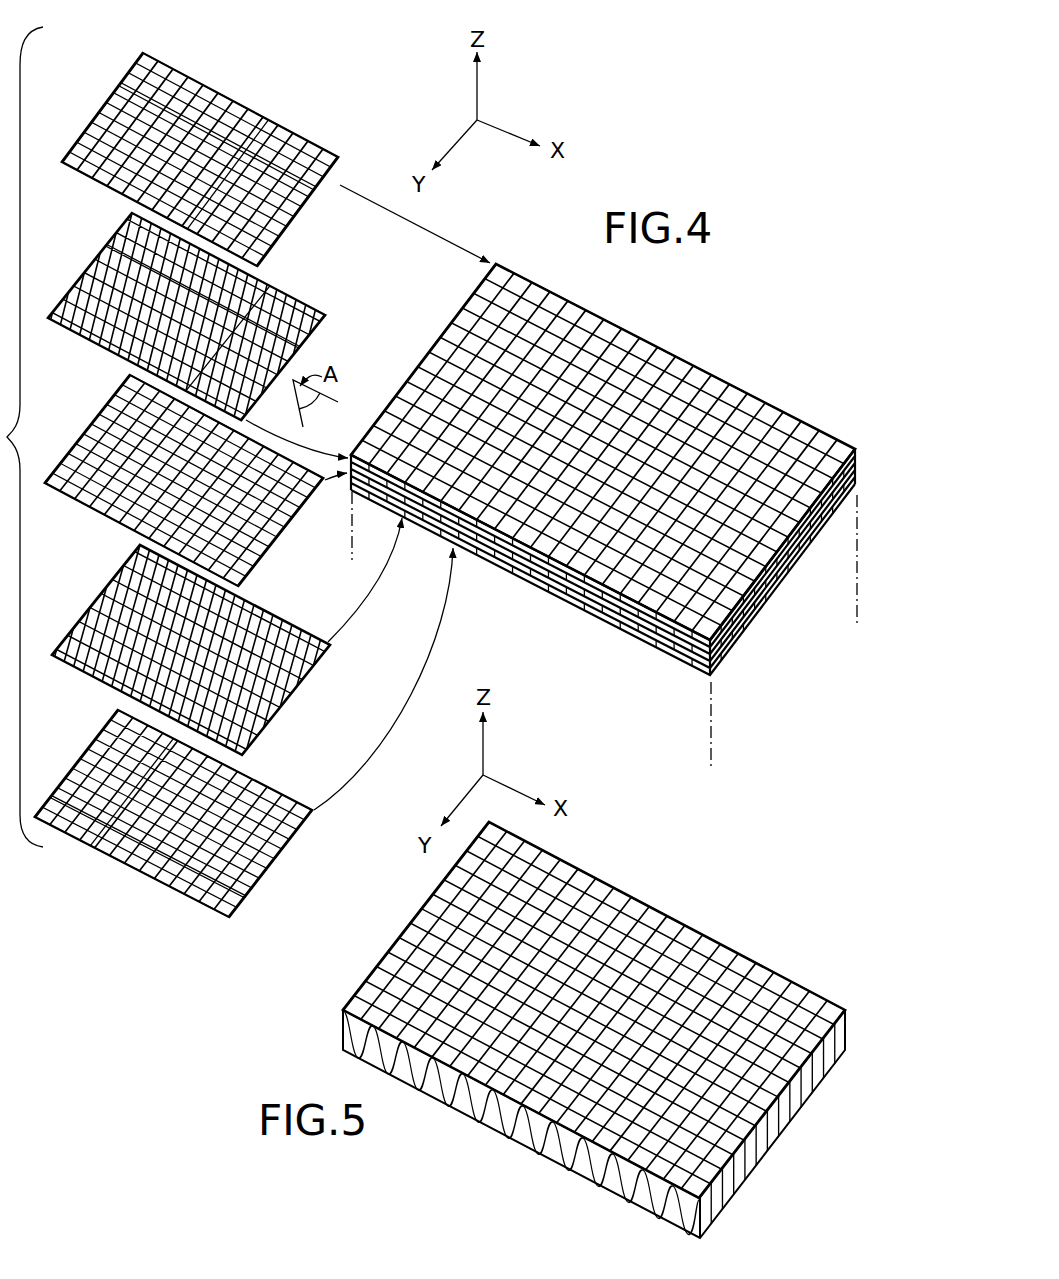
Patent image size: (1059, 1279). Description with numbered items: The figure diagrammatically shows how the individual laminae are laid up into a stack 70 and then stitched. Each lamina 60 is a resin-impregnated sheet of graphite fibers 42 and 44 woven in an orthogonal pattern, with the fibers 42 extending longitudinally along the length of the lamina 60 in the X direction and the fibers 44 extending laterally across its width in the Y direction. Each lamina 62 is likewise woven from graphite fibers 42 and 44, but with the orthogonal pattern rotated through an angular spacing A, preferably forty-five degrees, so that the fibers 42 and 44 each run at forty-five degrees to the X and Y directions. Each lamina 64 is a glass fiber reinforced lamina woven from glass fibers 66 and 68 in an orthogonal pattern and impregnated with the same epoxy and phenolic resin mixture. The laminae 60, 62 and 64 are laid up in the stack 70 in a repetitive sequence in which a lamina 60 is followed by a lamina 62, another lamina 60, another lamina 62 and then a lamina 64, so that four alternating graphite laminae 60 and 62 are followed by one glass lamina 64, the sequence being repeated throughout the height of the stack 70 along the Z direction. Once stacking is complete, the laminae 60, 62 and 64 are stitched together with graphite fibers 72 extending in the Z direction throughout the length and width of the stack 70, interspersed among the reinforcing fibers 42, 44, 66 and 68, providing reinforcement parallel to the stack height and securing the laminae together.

In FIG. 4, the graphite fibers 42 is at (265, 148).
In FIG. 4, the graphite fibers 44 is at (122, 148).
In FIG. 4, the lamina 60 is at (183, 62).
In FIG. 4, the lamina 62 is at (288, 284).
In FIG. 4, the lamina 64 is at (272, 890).
In FIG. 4, the glass fibers 66 is at (105, 846).
In FIG. 4, the glass fibers 68 is at (178, 882).
In FIG. 4, the stack 70 is at (598, 304).
In FIG. 5, the stack 70 is at (594, 1031).
In FIG. 5, the graphite fibers 72 is at (503, 1130).